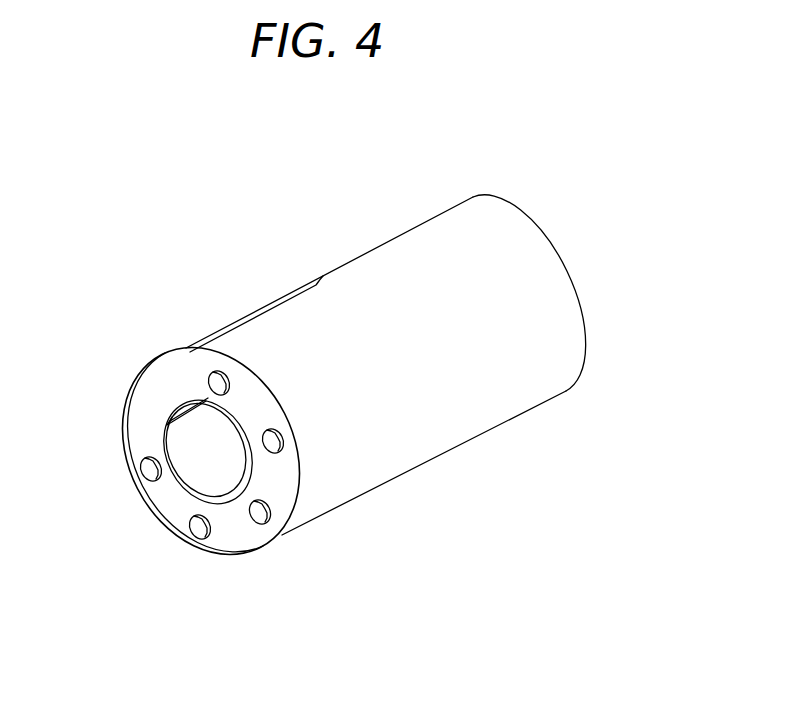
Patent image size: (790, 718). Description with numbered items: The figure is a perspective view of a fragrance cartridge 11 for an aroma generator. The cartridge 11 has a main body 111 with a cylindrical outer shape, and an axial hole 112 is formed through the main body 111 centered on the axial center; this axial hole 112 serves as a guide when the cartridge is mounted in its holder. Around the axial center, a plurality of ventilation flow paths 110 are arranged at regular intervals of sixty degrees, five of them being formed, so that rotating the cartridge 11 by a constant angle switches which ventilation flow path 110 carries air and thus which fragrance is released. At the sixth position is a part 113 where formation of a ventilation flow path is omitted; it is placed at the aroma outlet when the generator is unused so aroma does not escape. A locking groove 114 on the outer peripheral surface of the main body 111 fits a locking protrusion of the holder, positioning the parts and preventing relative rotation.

The cartridge 11 is at (506, 175).
The ventilation flow path 110 is at (210, 378).
The main body 111 is at (371, 259).
The axial hole 112 is at (205, 460).
The part where formation of the ventilation flow path is omitted 113 is at (145, 392).
The locking groove 114 is at (244, 309).